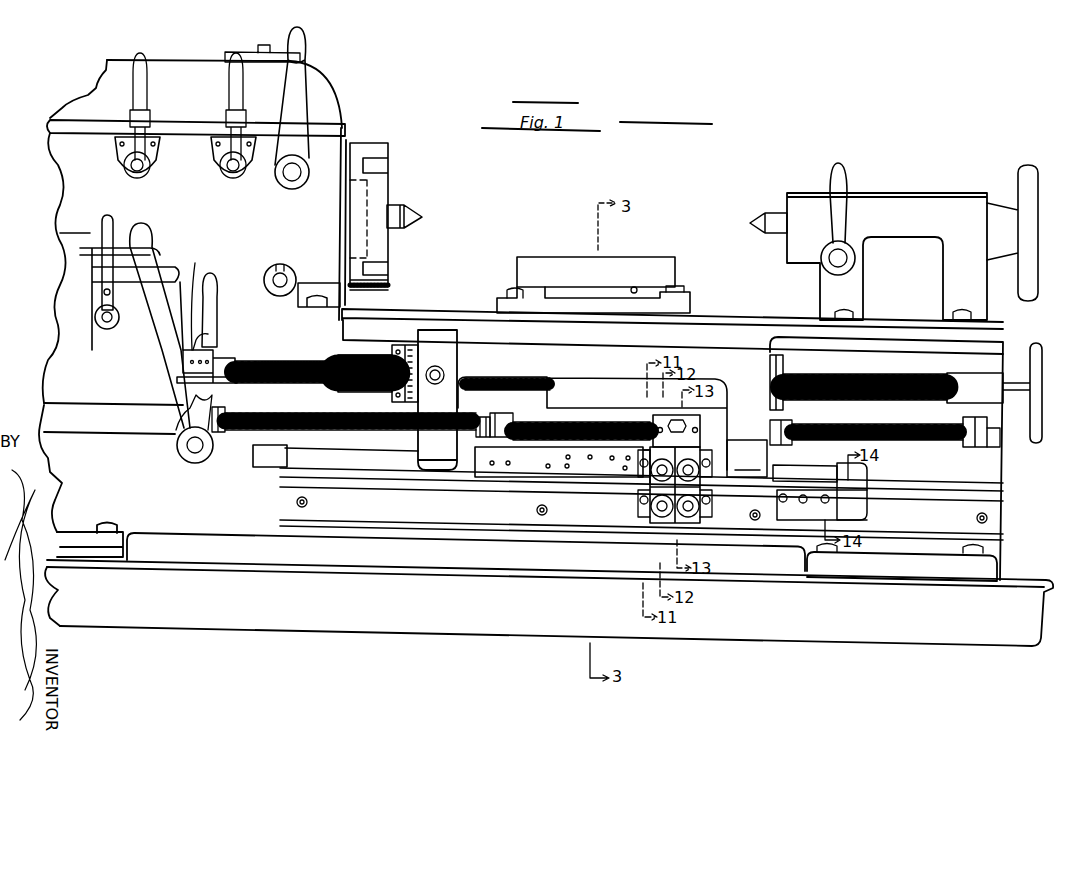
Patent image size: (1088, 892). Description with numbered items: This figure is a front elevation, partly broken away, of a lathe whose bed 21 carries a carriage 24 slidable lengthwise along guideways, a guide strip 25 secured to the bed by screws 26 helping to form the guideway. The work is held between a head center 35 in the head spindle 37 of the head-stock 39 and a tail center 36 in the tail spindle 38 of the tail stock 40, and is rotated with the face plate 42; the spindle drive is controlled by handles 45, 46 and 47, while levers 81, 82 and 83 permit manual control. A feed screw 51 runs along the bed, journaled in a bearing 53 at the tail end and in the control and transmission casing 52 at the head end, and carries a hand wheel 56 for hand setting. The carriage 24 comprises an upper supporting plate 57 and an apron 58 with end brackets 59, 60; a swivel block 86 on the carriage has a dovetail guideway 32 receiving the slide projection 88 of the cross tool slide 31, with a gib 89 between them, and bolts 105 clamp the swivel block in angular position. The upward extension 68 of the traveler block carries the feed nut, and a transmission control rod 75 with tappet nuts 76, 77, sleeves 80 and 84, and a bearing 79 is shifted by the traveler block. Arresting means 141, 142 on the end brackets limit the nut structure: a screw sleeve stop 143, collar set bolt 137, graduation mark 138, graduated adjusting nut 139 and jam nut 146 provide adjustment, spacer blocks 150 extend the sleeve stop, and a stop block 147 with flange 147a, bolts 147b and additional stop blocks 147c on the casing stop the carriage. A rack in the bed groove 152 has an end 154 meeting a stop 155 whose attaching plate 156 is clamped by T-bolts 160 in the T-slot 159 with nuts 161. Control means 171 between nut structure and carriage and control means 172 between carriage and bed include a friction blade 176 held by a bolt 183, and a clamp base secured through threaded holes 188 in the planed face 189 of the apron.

The bed 21 is at (62, 484).
The carriage 24 is at (705, 314).
The guide strip 25 is at (282, 502).
The screws 26 is at (560, 514).
The cross tool slide 31 is at (677, 277).
The guideway 32 is at (553, 291).
The head center 35 is at (414, 214).
The tail center 36 is at (760, 220).
The head spindle 37 is at (380, 198).
The tail spindle 38 is at (790, 208).
The head-stock 39 is at (352, 142).
The tail stock 40 is at (945, 198).
The face plate 42 is at (390, 152).
The handle 45 is at (312, 82).
The handle 46 is at (244, 102).
The handle 47 is at (148, 102).
The feed screw 51 is at (847, 405).
The control and transmission casing 52 is at (120, 388).
The bearing 53 is at (982, 383).
The hand wheel 56 is at (1044, 370).
The upper supporting plate 57 is at (762, 323).
The apron 58 is at (727, 358).
The end bracket 59 is at (418, 447).
The end bracket 60 is at (767, 458).
The upward extension 68 is at (626, 405).
The transmission control rod 75 is at (918, 440).
The nut 76 is at (494, 416).
The nut 77 is at (787, 426).
The bearing 79 is at (1000, 447).
The sleeve 80 is at (768, 430).
The lever 81 is at (160, 338).
The lever 82 is at (218, 292).
The lever 83 is at (112, 222).
The sleeve 84 is at (516, 422).
The swivel block 86 is at (572, 308).
The slide projection 88 is at (538, 296).
The gib 89 is at (640, 297).
The bolts 105 is at (696, 296).
The set bolt 137 is at (442, 373).
The graduation mark 138 is at (428, 372).
The graduated adjusting nut 139 is at (418, 402).
The arresting means 141 is at (360, 390).
The arresting means 142 is at (786, 362).
The screw sleeve stop 143 is at (348, 358).
The jam nut 146 is at (390, 354).
The stop block 147 is at (212, 332).
The flange 147a is at (201, 301).
The bolts 147b is at (205, 318).
The additional stop blocks 147c is at (214, 356).
The spacer blocks 150 is at (480, 380).
The groove 152 is at (352, 458).
The rack end 154 is at (775, 476).
The stop 155 is at (870, 477).
The attaching plate 156 is at (870, 516).
The T-slot 159 is at (920, 508).
The T-bolts 160 is at (803, 503).
The nuts 161 is at (829, 500).
The control means 171 is at (714, 462).
The control means 172 is at (713, 516).
The friction blade 176 is at (700, 428).
The bolt 183 is at (677, 434).
The threaded holes 188 is at (556, 463).
The planed face 189 is at (485, 477).